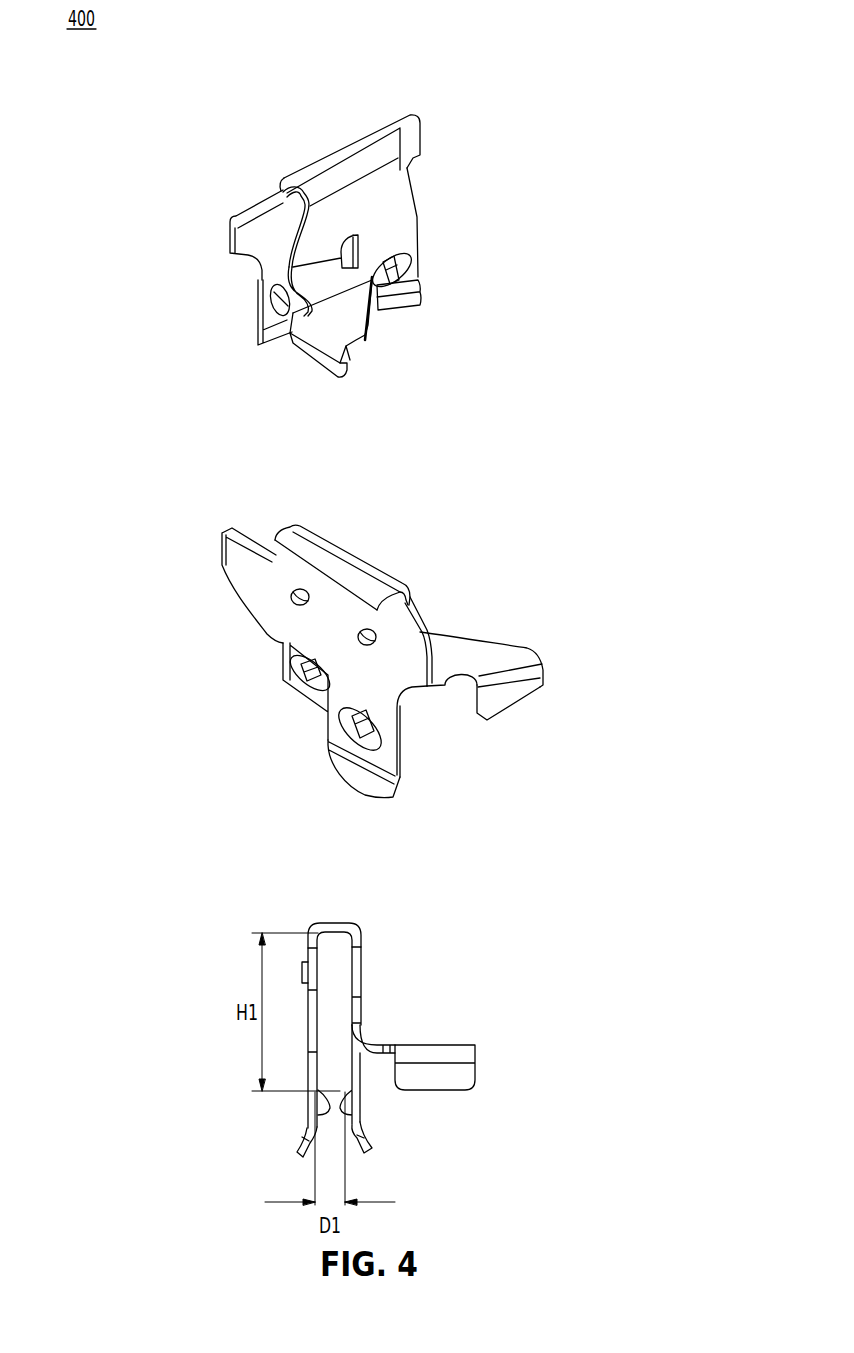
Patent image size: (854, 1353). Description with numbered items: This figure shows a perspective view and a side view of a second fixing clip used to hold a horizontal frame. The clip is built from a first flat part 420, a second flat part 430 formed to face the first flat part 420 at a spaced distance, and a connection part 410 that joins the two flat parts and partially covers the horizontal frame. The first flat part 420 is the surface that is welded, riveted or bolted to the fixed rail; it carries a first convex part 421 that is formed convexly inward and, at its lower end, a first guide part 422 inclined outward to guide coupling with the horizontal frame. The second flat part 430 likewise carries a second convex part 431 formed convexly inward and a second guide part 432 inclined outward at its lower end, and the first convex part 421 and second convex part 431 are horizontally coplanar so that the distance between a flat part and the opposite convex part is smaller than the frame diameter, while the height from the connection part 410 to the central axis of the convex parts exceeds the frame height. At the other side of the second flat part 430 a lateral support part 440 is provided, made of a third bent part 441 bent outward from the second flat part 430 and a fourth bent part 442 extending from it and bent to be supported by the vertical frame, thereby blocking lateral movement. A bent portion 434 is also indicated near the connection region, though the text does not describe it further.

The connection part 410 is at (347, 152).
The first flat part 420 is at (272, 227).
The first convex part 421 is at (270, 323).
The first guide part 422 is at (358, 773).
The second flat part 430 is at (372, 203).
The second convex part 431 is at (400, 262).
The second guide part 432 is at (404, 300).
The bent portion 434 is at (290, 262).
The lateral support part 440 is at (357, 368).
The third bent part 441 is at (360, 300).
The fourth bent part 442 is at (303, 355).